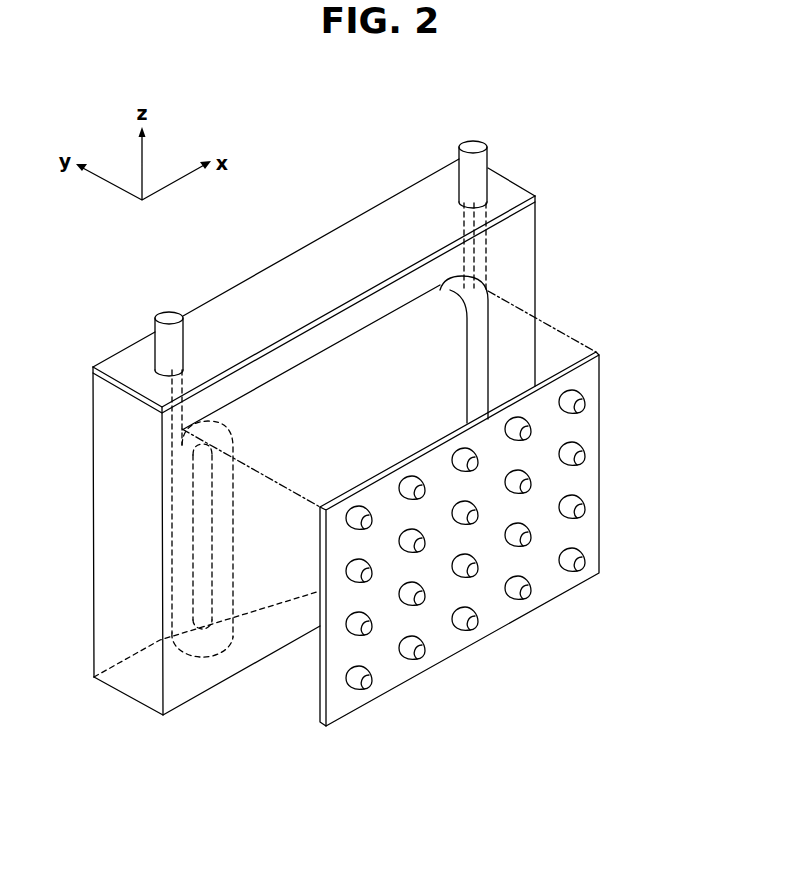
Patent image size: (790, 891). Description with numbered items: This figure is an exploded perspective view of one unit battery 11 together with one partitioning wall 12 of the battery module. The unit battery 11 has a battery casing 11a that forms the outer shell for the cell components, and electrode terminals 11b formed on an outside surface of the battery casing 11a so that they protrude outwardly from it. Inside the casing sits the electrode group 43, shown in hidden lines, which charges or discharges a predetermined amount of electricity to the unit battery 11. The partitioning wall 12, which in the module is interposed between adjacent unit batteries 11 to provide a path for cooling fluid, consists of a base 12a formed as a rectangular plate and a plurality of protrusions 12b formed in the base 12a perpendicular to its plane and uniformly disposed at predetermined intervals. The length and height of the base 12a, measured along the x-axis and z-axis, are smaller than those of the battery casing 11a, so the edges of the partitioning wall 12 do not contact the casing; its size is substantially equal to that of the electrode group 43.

The unit battery 11 is at (345, 455).
The battery casing 11a is at (537, 268).
The electrode terminals 11b is at (489, 163).
The partitioning wall 12 is at (496, 548).
The base 12a is at (497, 622).
The protrusions 12b is at (372, 679).
The electrode group 43 is at (172, 634).